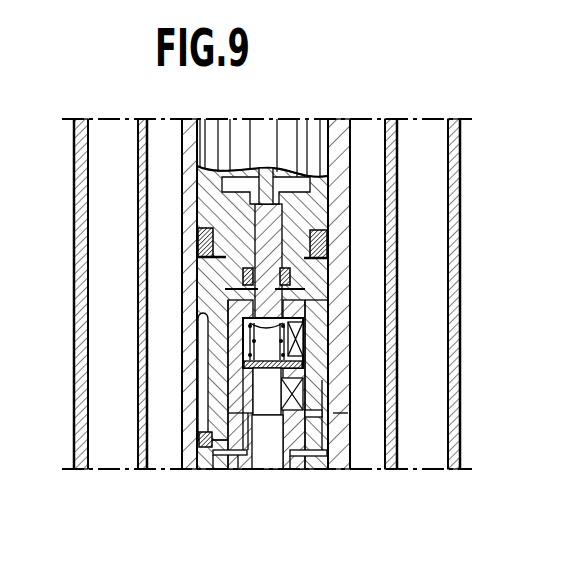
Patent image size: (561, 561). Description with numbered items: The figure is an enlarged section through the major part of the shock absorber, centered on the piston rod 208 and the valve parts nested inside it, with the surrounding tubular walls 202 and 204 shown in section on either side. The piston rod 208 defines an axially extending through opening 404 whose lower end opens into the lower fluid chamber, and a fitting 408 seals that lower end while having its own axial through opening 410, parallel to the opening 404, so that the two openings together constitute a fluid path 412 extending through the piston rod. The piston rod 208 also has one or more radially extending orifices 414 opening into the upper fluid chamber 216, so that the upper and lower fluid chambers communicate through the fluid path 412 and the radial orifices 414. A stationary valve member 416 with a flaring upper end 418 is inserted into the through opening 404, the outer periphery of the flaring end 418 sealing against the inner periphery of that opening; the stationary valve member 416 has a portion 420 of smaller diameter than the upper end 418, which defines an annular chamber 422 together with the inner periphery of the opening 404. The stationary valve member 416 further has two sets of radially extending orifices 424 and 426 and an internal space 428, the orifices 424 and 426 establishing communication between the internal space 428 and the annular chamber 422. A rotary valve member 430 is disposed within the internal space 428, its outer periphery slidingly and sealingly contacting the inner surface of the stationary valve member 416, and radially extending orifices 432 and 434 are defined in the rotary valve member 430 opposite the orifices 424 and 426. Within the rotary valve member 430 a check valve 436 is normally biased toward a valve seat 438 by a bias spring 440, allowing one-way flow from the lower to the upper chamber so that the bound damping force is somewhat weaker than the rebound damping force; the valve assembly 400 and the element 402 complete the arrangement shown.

The outer casing 202 is at (462, 228).
The inner tubular member 204 is at (395, 313).
The piston rod 208 is at (338, 127).
The upper fluid chamber 216 is at (352, 376).
The valve assembly 400 is at (343, 254).
The spring 402 is at (308, 402).
The through opening 404 is at (205, 470).
The fitting 408 is at (212, 470).
The through opening 410 is at (268, 440).
The fluid path 412 is at (290, 470).
The radially extending orifices 414 is at (345, 401).
The stationary valve member 416 is at (216, 350).
The flaring upper end 418 is at (208, 277).
The smaller-diameter portion 420 is at (217, 364).
The annular chamber 422 is at (203, 395).
The radially extending orifices 424 is at (306, 353).
The radially extending orifices 426 is at (350, 423).
The internal space 428 is at (296, 281).
The rotary valve member 430 is at (238, 470).
The radially extending orifices 432 is at (332, 305).
The radially extending orifices 434 is at (297, 470).
The check valve 436 is at (265, 417).
The valve seat 438 is at (240, 382).
The bias spring 440 is at (243, 340).